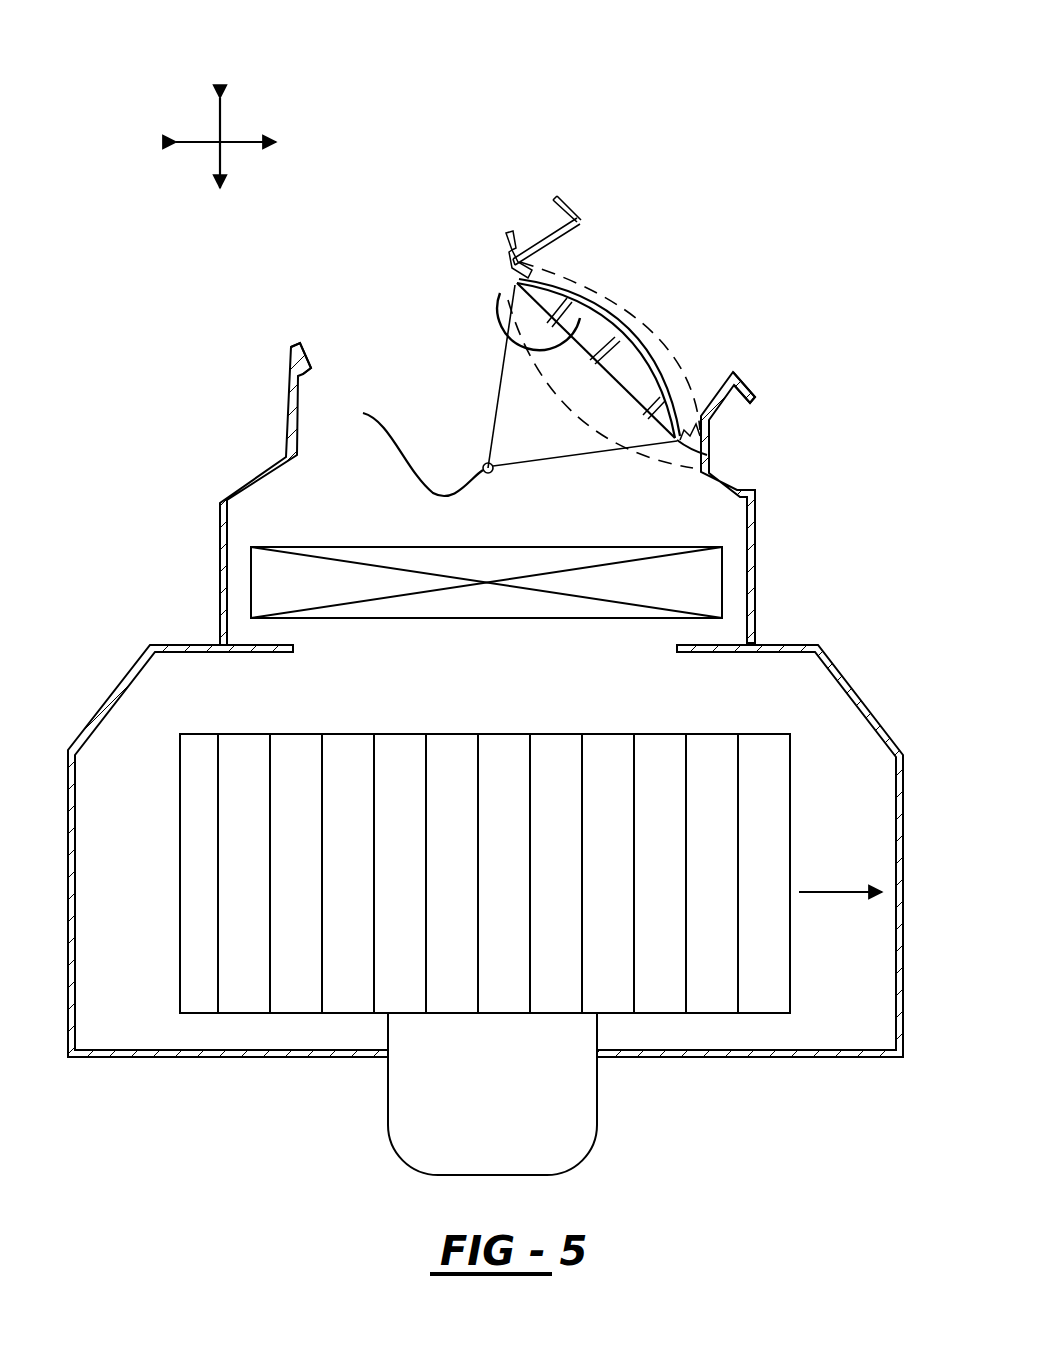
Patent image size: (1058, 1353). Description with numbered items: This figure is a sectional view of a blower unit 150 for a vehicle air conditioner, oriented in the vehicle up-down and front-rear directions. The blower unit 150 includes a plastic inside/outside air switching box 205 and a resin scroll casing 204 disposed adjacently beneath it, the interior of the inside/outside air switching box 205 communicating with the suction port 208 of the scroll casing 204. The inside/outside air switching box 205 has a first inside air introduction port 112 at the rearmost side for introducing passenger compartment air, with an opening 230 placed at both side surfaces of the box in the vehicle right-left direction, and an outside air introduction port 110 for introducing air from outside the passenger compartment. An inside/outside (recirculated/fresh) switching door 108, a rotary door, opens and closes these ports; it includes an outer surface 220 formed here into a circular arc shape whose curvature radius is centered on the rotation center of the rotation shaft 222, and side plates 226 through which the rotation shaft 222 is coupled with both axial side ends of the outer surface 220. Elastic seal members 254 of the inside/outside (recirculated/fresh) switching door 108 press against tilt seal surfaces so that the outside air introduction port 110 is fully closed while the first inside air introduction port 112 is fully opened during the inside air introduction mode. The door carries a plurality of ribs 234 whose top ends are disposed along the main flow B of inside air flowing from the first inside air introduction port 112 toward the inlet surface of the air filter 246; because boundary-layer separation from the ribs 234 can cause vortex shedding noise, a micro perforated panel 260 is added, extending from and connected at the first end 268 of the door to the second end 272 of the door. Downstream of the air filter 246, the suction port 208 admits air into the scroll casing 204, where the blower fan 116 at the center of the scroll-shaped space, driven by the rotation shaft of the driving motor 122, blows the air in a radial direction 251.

The blower unit 150 is at (124, 94).
The scroll casing 204 is at (68, 843).
The first inside air introduction port 112 is at (342, 312).
The opening 230 is at (387, 355).
The inside/outside air switching box 205 is at (750, 394).
The elastic seal members 254 is at (712, 443).
The first end 268 is at (708, 452).
The air filter 246 is at (251, 575).
The blower fan 116 is at (180, 975).
The driving motor 122 is at (387, 1117).
The suction port 208 is at (612, 698).
The radial direction 251 is at (830, 892).
The rotation shaft 222 is at (400, 447).
The side plates 226 is at (535, 413).
The micro perforated panel (MPP) 260 is at (507, 347).
The inside/outside (recirculated/fresh) switching door 108 is at (507, 290).
The second end 272 is at (512, 262).
The outer surface 220 is at (660, 350).
The ribs 234 is at (618, 297).
The outside air introduction port 110 is at (690, 277).
The main flow B is at (480, 386).